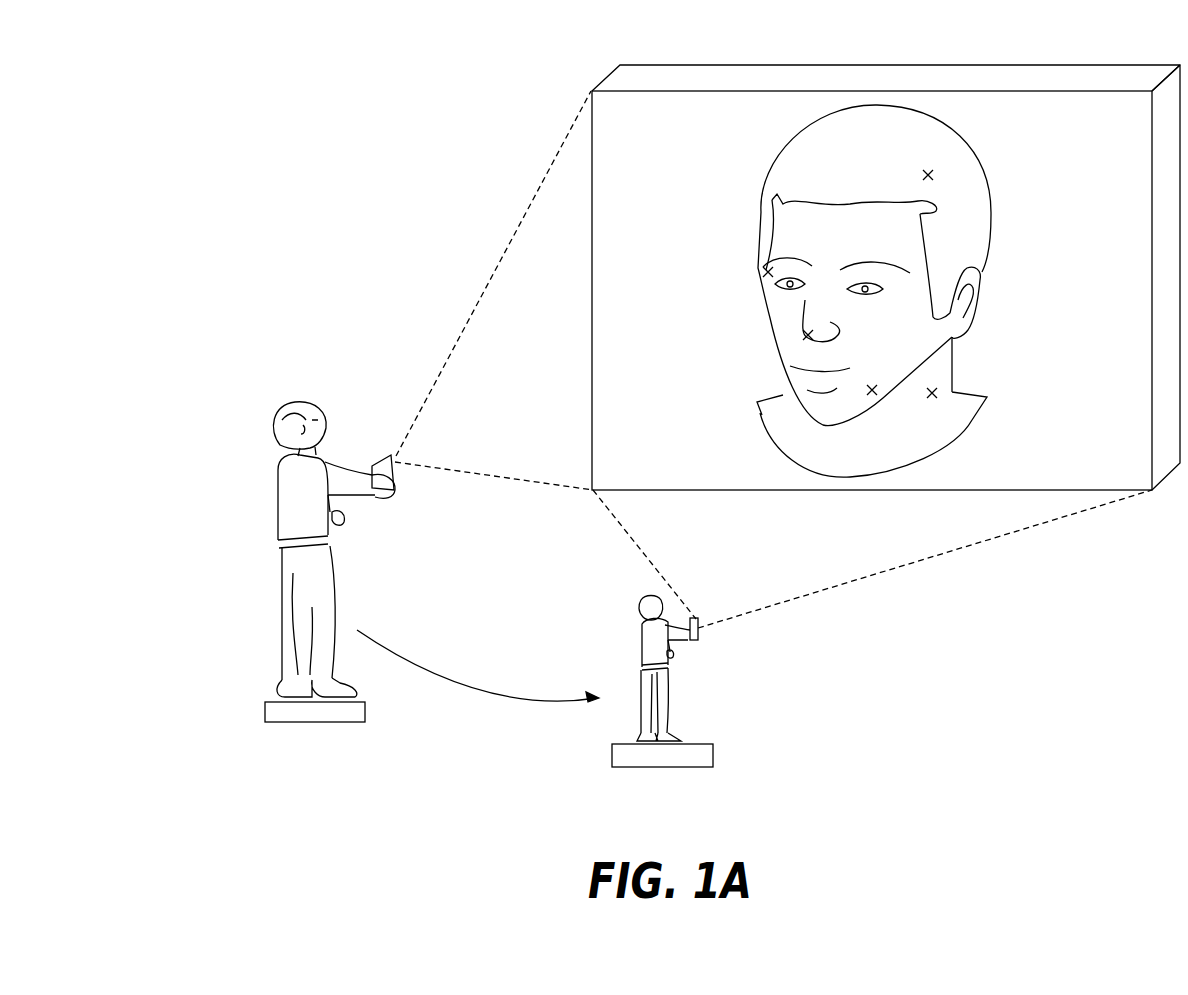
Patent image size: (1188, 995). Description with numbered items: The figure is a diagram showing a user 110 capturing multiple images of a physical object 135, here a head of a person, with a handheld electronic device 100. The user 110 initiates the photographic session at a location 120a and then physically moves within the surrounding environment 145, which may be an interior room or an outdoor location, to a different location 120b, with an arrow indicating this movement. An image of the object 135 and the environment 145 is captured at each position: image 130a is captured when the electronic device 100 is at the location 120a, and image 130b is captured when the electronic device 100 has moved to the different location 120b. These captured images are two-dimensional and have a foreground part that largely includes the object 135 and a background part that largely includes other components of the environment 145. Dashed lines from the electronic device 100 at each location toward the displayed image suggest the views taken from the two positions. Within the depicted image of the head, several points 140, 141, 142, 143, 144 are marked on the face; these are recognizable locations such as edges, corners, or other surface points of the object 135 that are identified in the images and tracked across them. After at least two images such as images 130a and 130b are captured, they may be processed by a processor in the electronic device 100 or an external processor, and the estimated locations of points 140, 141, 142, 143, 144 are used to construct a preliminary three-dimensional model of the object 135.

The electronic device 100 is at (394, 487).
The user 110 is at (277, 497).
The location 120a is at (366, 715).
The different location 120b is at (714, 752).
The image 130a is at (1050, 100).
The image 130b is at (1108, 76).
The physical object 135 is at (720, 185).
The point 140 is at (765, 275).
The point 141 is at (810, 330).
The point 142 is at (870, 385).
The point 143 is at (940, 395).
The point 144 is at (926, 172).
The environment 145 is at (478, 145).